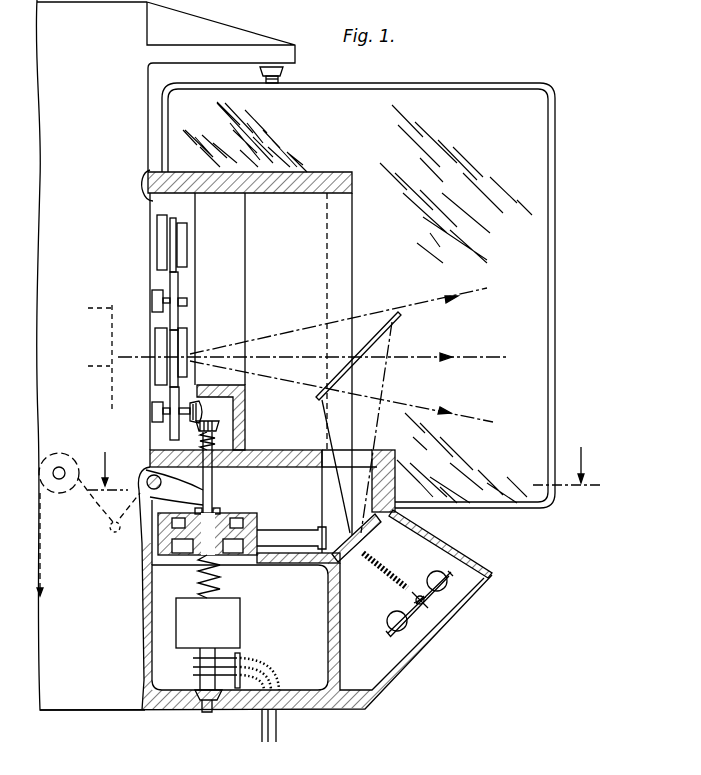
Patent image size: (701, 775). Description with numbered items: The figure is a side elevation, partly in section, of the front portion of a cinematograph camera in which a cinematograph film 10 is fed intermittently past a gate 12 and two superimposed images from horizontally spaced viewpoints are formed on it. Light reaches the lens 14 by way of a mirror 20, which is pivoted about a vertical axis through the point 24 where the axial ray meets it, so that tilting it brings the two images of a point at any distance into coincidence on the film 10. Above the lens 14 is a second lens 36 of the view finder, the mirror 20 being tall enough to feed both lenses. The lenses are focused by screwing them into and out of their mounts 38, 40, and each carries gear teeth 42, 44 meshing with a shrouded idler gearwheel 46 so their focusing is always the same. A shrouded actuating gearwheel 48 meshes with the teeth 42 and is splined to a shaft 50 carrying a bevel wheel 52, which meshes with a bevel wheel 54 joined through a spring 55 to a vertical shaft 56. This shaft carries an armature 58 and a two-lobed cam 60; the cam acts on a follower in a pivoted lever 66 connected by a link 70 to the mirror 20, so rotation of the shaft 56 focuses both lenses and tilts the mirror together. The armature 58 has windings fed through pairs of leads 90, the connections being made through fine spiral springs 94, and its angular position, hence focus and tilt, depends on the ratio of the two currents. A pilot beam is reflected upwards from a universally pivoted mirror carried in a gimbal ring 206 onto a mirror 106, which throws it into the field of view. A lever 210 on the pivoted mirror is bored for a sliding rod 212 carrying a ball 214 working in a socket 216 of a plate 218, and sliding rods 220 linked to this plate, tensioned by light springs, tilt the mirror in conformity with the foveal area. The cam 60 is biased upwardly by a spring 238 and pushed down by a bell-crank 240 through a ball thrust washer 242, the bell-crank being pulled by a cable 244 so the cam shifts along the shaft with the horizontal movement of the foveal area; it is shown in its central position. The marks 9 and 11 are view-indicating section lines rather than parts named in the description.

The optical fiber 9 is at (283, 728).
The cinematograph film 10 is at (266, 440).
The section line 11 is at (347, 468).
The gate 12 is at (89, 355).
The lens 14 is at (187, 355).
The mirror 20 is at (528, 299).
The point 24 is at (273, 84).
The second lens 36 is at (187, 243).
The mount 38 is at (157, 350).
The mount 40 is at (157, 258).
The gear teeth 42 is at (175, 335).
The gear teeth 44 is at (173, 235).
The shrouded idler gearwheel 46 is at (175, 288).
The shrouded actuating gearwheel 48 is at (172, 400).
The shaft 50 is at (157, 420).
The bevel wheel 52 is at (202, 410).
The bevel wheel 54 is at (216, 425).
The spring 55 is at (214, 440).
The vertical shaft 56 is at (212, 481).
The armature 58 is at (230, 635).
The two-lobed cam 60 is at (230, 540).
The pivoted lever 66 is at (282, 535).
The link 70 is at (312, 556).
The pair of leads 90 is at (268, 724).
The fine spiral springs 94 is at (195, 672).
The mirror 106 is at (379, 328).
The gimbal ring 206 is at (378, 530).
The lever 210 is at (386, 572).
The sliding rod 212 is at (410, 598).
The ball 214 is at (420, 602).
The socket 216 is at (427, 600).
The plate 218 is at (430, 597).
The sliding rods 220 is at (403, 627).
The spring 238 is at (198, 583).
The bell-crank 240 is at (180, 488).
The ball thrust washer 242 is at (228, 505).
The cable 244 is at (97, 503).